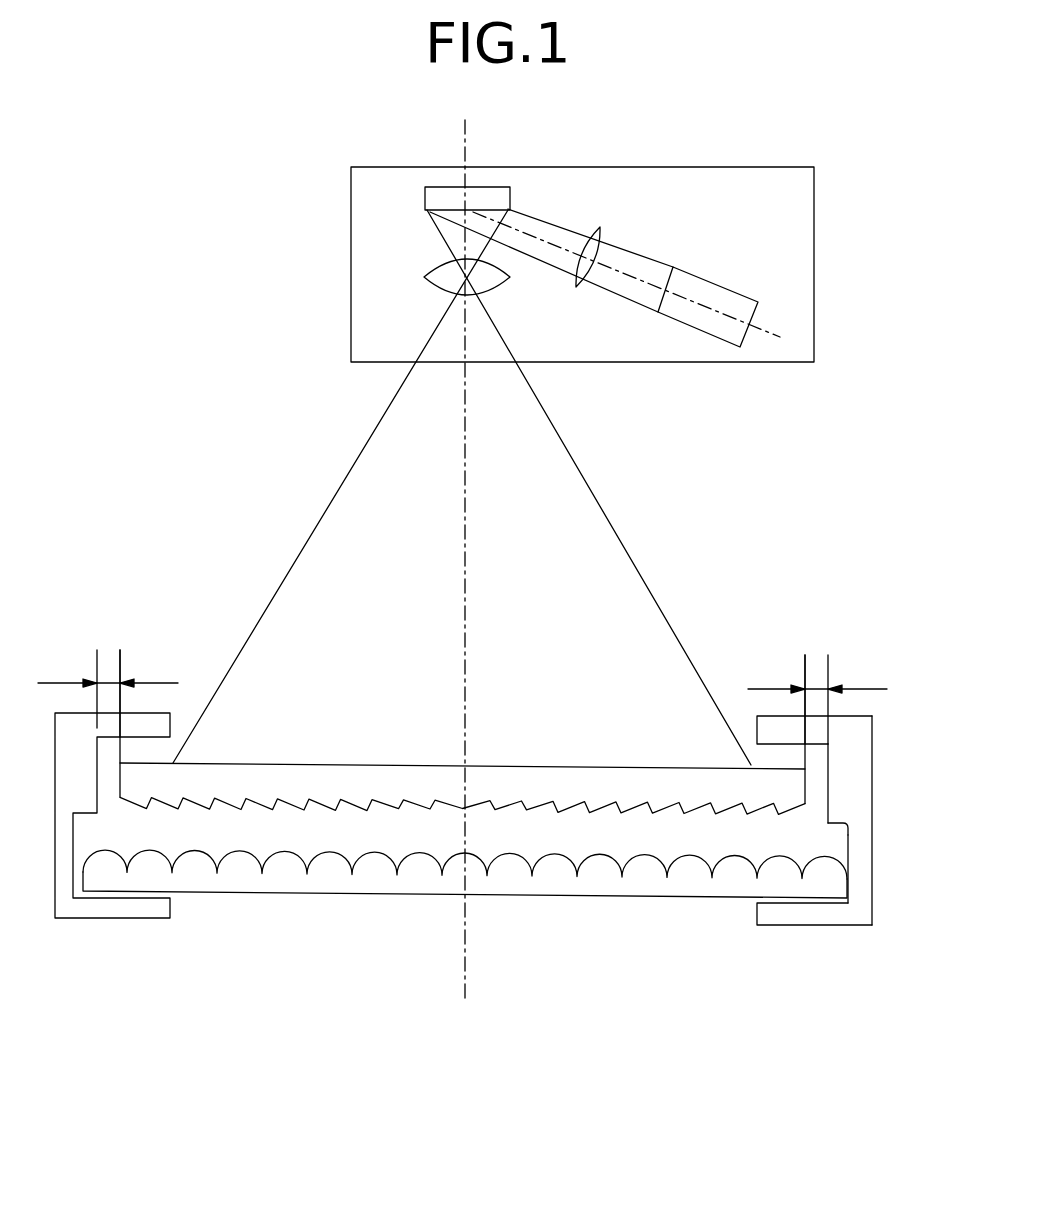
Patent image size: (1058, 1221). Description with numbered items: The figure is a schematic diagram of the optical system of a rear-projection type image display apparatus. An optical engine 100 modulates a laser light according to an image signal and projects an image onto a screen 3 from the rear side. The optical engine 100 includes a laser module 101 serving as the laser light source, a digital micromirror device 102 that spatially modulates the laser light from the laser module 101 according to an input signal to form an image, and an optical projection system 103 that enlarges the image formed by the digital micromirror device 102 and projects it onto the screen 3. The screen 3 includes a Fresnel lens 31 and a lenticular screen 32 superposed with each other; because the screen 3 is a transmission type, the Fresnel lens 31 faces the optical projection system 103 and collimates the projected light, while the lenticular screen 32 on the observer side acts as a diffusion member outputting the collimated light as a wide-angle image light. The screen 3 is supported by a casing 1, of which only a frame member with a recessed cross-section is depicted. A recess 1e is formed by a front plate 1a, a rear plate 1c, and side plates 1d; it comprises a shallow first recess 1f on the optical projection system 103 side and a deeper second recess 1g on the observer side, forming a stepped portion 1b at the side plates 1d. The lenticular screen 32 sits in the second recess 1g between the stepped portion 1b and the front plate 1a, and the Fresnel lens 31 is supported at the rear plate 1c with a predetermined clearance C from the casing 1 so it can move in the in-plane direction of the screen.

The optical engine 100 is at (683, 167).
The laser module 101 is at (718, 282).
The digital micromirror device (DMD) 102 is at (427, 190).
The optical projection system 103 is at (425, 277).
The casing 1 is at (505, 801).
The front plate 1a is at (828, 915).
The stepped portion 1b is at (841, 828).
The rear plate 1c is at (767, 717).
The side plates 1d is at (850, 790).
The recess 1e is at (809, 826).
The first recess 1f is at (828, 757).
The second recess 1g is at (852, 866).
The screen 3 is at (465, 878).
The Fresnel lens 31 is at (653, 808).
The lenticular screen 32 is at (553, 1000).
The clearance C is at (462, 696).